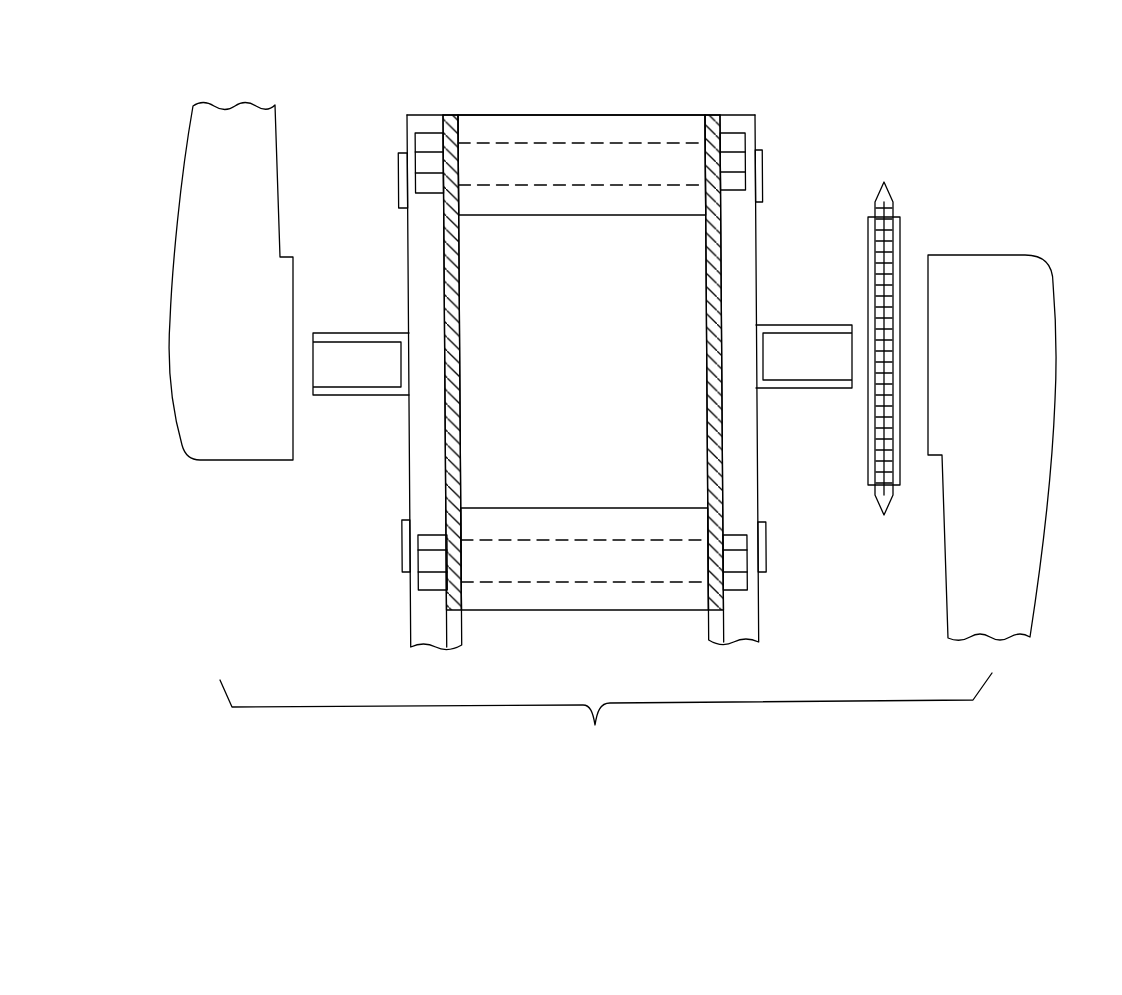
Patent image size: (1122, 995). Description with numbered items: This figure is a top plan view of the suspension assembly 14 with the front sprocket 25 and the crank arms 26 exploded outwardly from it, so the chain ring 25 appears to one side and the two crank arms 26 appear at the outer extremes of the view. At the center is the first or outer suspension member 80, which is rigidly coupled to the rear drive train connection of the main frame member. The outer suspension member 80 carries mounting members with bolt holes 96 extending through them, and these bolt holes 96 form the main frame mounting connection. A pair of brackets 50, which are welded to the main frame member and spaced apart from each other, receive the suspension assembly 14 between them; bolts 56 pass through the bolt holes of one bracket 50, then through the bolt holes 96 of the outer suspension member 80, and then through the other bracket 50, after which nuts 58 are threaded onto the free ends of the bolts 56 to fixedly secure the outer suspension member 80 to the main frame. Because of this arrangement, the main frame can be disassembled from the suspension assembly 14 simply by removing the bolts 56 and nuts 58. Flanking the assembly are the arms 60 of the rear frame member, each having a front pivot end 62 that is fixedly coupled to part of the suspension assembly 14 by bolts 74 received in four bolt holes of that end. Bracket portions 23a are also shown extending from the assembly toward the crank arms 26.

The suspension assembly 14 is at (676, 87).
The mounting bracket 23a is at (340, 332).
The front chain ring or sprocket 25 is at (893, 207).
The crank arms 26 is at (278, 155).
The brackets 50 is at (458, 275).
The bolts 56 is at (753, 132).
The nuts 58 is at (370, 605).
The arms 60 is at (406, 486).
The front pivot end 62 is at (420, 430).
The bolts 74 is at (398, 180).
The first or outer suspension member 80 is at (542, 115).
The bolt holes 96 is at (639, 185).